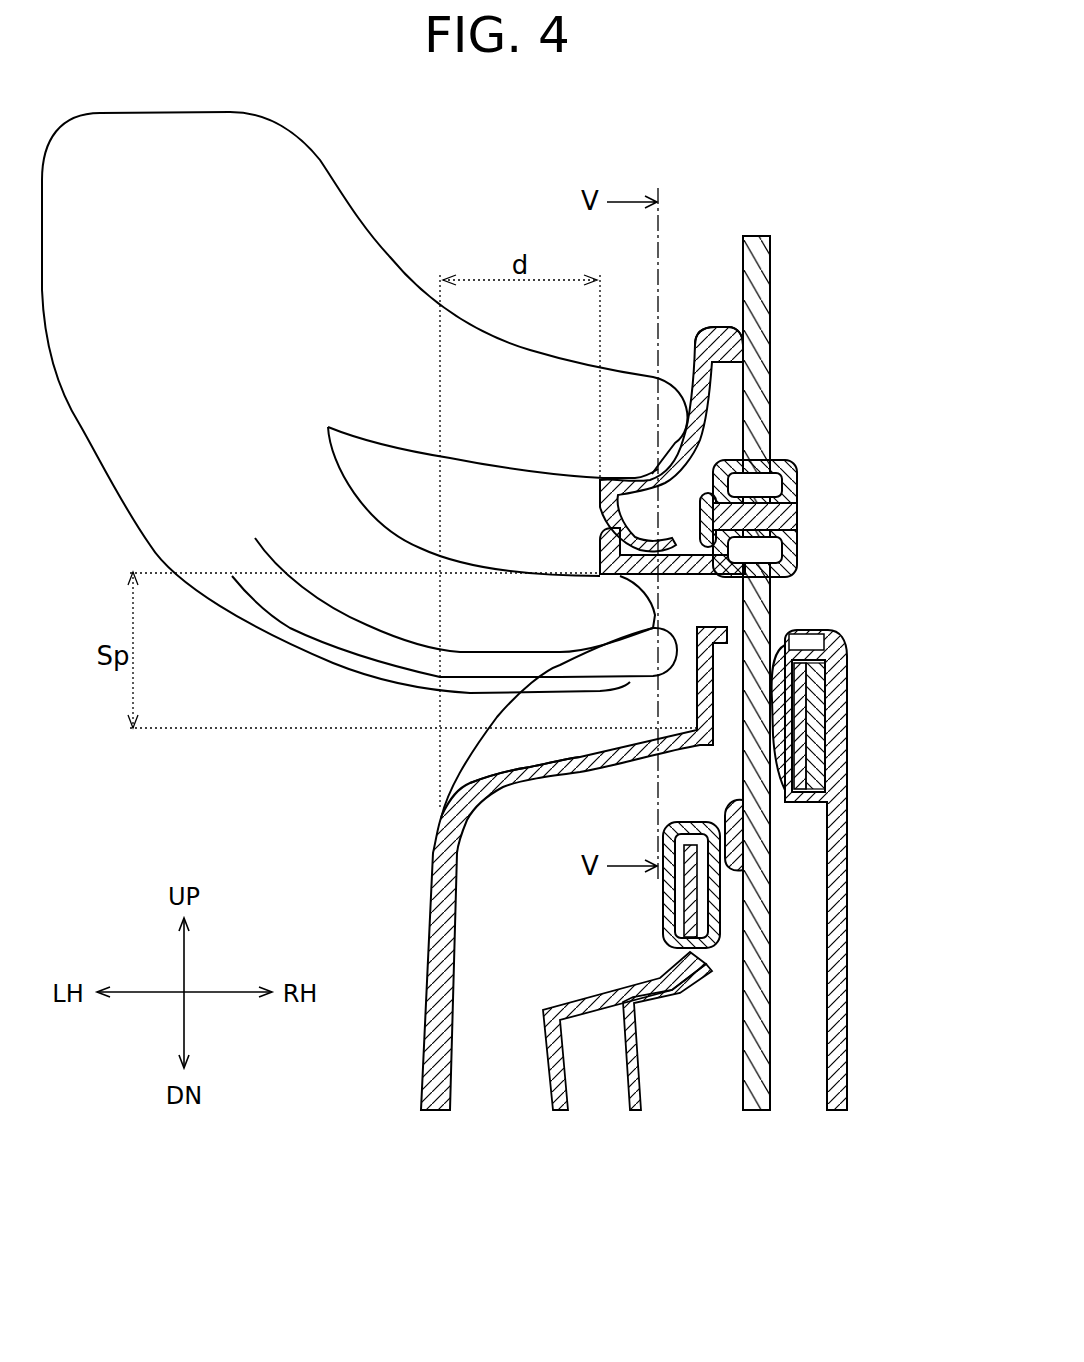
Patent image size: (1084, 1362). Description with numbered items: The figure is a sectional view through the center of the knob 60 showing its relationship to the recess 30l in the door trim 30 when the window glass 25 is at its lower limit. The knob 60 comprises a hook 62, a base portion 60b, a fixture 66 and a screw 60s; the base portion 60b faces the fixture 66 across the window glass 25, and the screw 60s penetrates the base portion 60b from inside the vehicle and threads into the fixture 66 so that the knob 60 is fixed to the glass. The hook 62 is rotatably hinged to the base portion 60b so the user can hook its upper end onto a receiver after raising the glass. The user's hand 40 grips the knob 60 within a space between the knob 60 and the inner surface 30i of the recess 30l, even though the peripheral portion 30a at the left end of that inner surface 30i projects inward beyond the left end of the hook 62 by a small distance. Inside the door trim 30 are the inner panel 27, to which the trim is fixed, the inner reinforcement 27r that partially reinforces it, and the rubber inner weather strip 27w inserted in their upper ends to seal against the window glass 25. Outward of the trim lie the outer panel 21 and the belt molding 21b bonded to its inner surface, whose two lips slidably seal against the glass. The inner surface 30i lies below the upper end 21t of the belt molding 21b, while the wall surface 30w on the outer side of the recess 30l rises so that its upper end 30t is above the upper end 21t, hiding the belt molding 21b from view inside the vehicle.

The hand 40 is at (338, 238).
The window glass 25 is at (759, 236).
The knob 60 is at (741, 330).
The hook 62 is at (700, 395).
The base portion 60b is at (747, 484).
The screw 60s is at (770, 519).
The fixture 66 is at (797, 556).
The upper end 30t is at (780, 620).
The upper end 21t is at (833, 656).
The wall surface 30w is at (717, 705).
The belt molding 21b is at (811, 822).
The outer panel 21 is at (837, 924).
The door trim 30 is at (440, 905).
The recess 30l is at (566, 723).
The inner surface 30i is at (540, 767).
The peripheral portion 30a is at (456, 792).
The inner panel 27 is at (553, 1065).
The inner reinforcement 27r is at (630, 1072).
The inner weather strip 27w is at (679, 973).